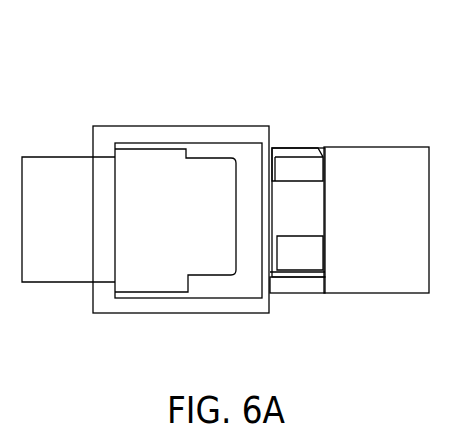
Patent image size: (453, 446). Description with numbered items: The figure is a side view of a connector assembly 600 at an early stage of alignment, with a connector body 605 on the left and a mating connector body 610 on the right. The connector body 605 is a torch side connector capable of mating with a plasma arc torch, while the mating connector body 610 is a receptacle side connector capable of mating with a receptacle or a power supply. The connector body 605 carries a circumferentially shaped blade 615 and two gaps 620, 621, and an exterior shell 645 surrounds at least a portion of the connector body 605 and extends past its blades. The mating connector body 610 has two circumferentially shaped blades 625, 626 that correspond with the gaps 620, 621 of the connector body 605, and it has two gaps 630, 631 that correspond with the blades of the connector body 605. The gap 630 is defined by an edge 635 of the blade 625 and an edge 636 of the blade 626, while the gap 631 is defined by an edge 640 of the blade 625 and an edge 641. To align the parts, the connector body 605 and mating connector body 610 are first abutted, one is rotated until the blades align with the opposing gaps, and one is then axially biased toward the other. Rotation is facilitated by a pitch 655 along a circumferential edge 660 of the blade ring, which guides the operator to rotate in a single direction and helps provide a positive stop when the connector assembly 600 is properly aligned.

The connector assembly 600 is at (113, 82).
The connector body 605 is at (48, 270).
The exterior shell 645 is at (117, 310).
The gap 621 is at (201, 147).
The circumferential edge 660 is at (236, 233).
The pitch 655 is at (242, 200).
The circumferentially shaped blade 615 is at (205, 255).
The gap 620 is at (208, 293).
The mating connector body 610 is at (379, 158).
The gap 630 is at (301, 218).
The edge 636 is at (312, 147).
The circumferentially shaped blade 626 is at (289, 147).
The edge 641 is at (290, 182).
The gap 631 is at (301, 192).
The edge 635 is at (308, 278).
The circumferentially shaped blade 625 is at (305, 286).
The edge 640 is at (277, 237).